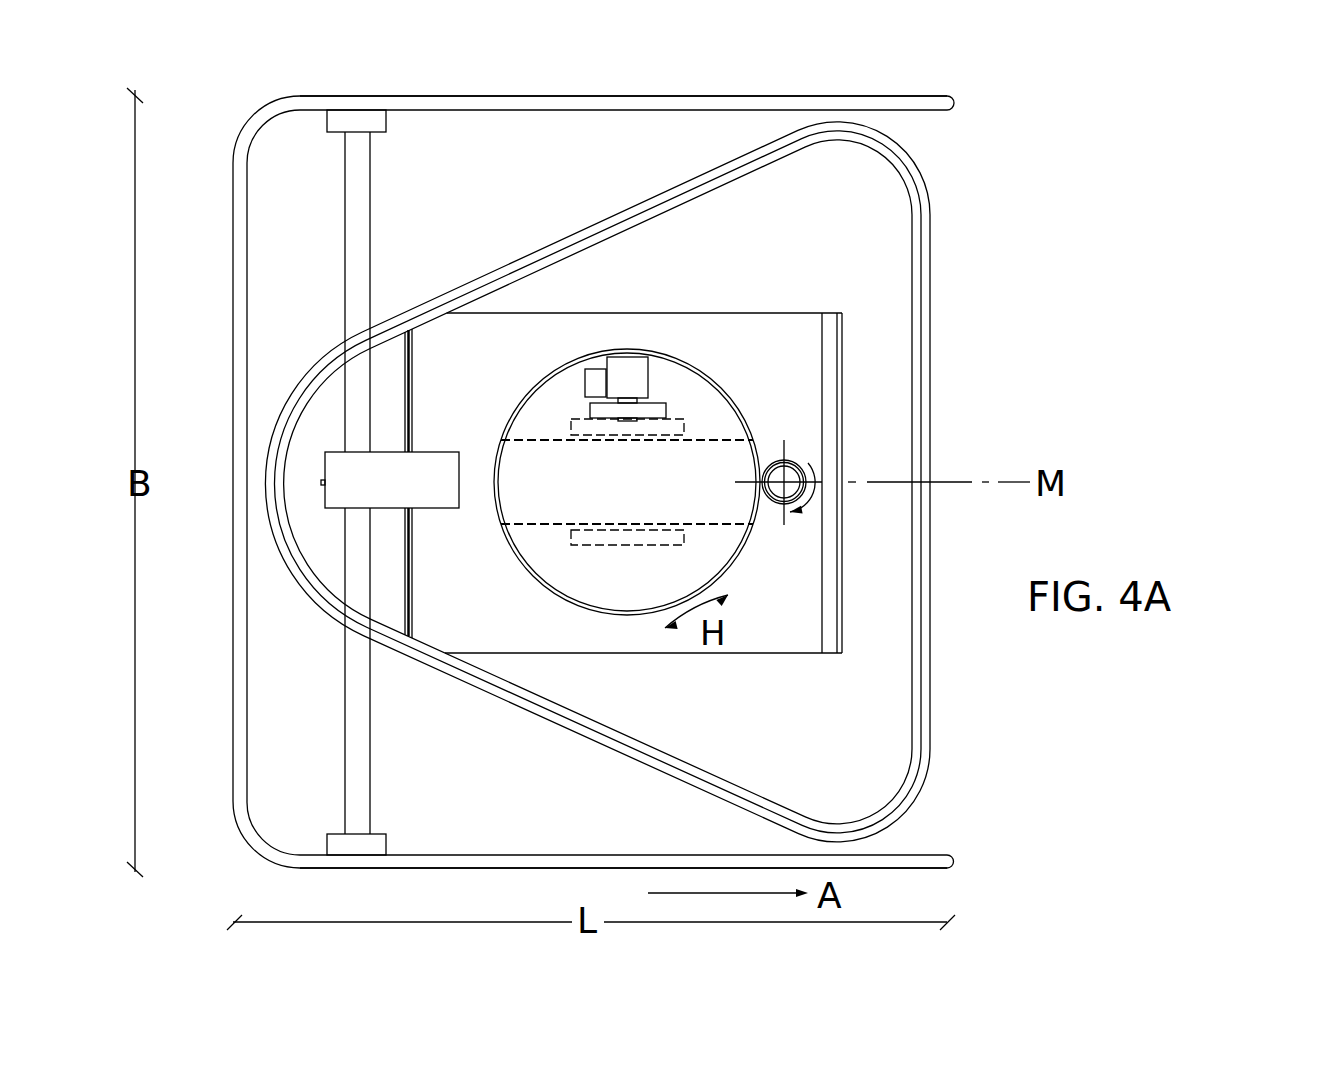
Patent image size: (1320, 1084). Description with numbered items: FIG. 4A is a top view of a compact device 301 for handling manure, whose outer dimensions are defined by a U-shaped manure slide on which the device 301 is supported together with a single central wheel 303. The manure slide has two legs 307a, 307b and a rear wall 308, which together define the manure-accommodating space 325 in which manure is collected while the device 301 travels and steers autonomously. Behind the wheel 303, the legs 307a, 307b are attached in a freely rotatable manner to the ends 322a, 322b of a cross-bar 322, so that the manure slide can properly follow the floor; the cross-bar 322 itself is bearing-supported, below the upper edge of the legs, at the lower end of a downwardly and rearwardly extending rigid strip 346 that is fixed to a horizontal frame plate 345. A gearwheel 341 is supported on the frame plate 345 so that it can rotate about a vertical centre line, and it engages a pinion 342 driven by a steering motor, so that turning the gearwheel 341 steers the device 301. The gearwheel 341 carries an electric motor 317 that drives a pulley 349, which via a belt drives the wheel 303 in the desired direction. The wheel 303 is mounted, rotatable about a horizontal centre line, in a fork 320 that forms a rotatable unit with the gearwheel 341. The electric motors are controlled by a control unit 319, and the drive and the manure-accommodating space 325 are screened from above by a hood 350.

The device 301 is at (958, 685).
The wheel 303 is at (535, 483).
The leg 307a is at (540, 859).
The leg 307b is at (541, 104).
The rear wall 308 is at (241, 668).
The electric motor 317 is at (629, 369).
The control unit 319 is at (597, 368).
The fork 320 is at (667, 427).
The cross-bar 322 is at (357, 216).
The end of cross-bar 322a is at (357, 843).
The end of cross-bar 322b is at (357, 121).
The manure-accommodating space 325 is at (485, 739).
The gearwheel 341 is at (581, 574).
The pinion 342 is at (791, 477).
The frame plate 345 is at (574, 637).
The rigid strip 346 is at (415, 499).
The pulley 349 is at (642, 409).
The hood 350 is at (887, 287).